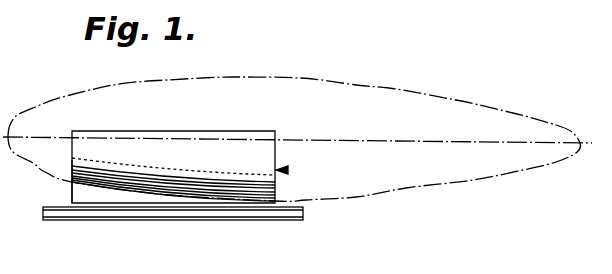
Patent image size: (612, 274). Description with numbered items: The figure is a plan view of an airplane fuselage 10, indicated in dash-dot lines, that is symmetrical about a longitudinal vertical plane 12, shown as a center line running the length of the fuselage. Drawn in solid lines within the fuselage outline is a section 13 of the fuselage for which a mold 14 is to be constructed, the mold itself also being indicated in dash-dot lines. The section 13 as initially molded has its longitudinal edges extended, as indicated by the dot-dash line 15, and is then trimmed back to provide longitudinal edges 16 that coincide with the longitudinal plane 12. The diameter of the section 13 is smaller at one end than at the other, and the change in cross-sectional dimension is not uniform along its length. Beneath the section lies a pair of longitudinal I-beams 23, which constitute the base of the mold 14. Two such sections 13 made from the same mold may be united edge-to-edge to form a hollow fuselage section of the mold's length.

The airplane fuselage 10 is at (390, 88).
The longitudinal vertical plane 12 is at (367, 118).
The section of the fuselage 13 is at (284, 170).
The mold 14 is at (72, 195).
The dot-dash line 15 is at (186, 131).
The longitudinal edges 16 is at (233, 138).
The longitudinal I-beams 23 is at (270, 219).